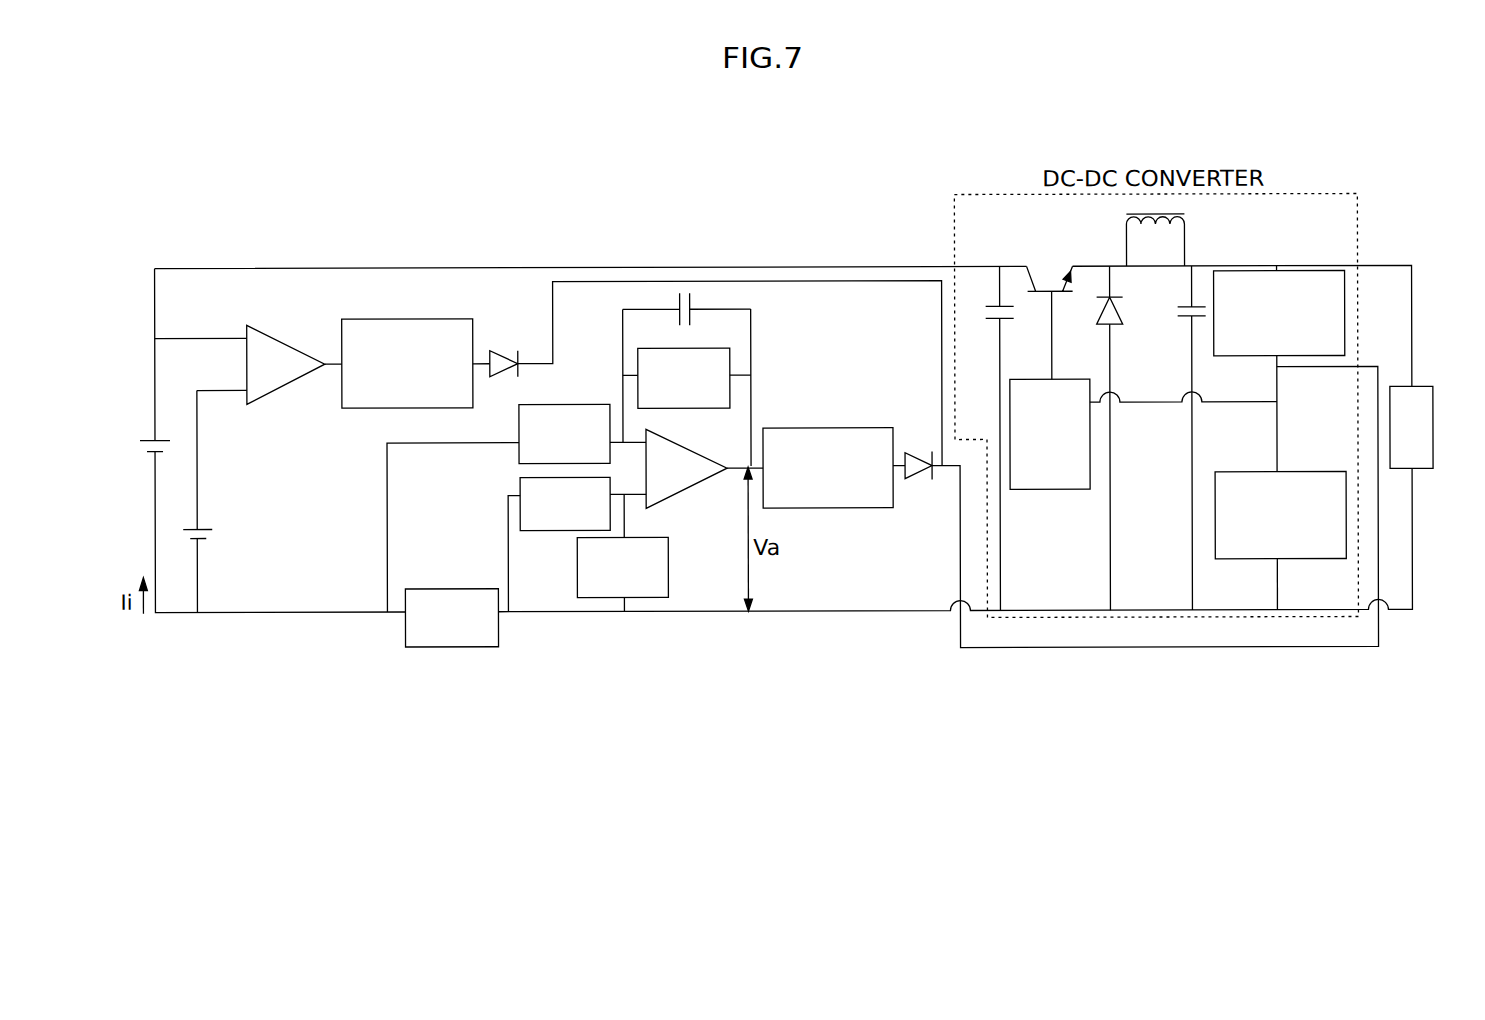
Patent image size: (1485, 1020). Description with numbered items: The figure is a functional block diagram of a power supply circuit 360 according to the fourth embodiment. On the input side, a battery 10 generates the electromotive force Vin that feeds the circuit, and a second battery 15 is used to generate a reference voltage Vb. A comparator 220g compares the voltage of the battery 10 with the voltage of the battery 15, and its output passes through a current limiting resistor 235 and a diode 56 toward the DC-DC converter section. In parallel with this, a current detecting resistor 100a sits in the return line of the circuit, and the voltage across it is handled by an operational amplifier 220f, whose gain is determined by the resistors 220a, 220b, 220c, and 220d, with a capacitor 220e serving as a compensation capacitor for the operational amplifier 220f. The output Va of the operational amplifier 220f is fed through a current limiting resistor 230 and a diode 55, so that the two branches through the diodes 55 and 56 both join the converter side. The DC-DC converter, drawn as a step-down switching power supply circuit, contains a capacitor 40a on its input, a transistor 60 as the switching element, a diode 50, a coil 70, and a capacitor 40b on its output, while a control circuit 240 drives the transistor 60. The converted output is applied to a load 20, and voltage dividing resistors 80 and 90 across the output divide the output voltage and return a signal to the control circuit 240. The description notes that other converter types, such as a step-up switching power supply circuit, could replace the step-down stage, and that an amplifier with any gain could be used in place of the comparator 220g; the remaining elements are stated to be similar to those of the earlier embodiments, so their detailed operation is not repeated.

The battery 10 is at (158, 436).
The battery 15 is at (199, 524).
The load 20 is at (1400, 386).
The capacitor 40a is at (988, 306).
The capacitor 40b is at (1190, 300).
The diode 50 is at (1122, 319).
The diode 55 is at (928, 450).
The diode 56 is at (500, 347).
The transistor 60 is at (1065, 268).
The coil 70 is at (1195, 247).
The voltage dividing resistor 80 is at (1348, 314).
The voltage dividing resistor 90 is at (1316, 472).
The resistor 100a is at (437, 587).
The resistor 220a is at (673, 348).
The resistor 220b is at (670, 595).
The resistor 220c is at (518, 432).
The resistor 220d is at (518, 481).
The capacitor 220e is at (692, 297).
The operational amplifier 220f is at (717, 461).
The comparator 220g is at (293, 340).
The current limiting resistor 230 is at (800, 427).
The current limiting resistor 235 is at (397, 316).
The control circuit 240 is at (1067, 379).
The power supply circuit 360 is at (352, 211).